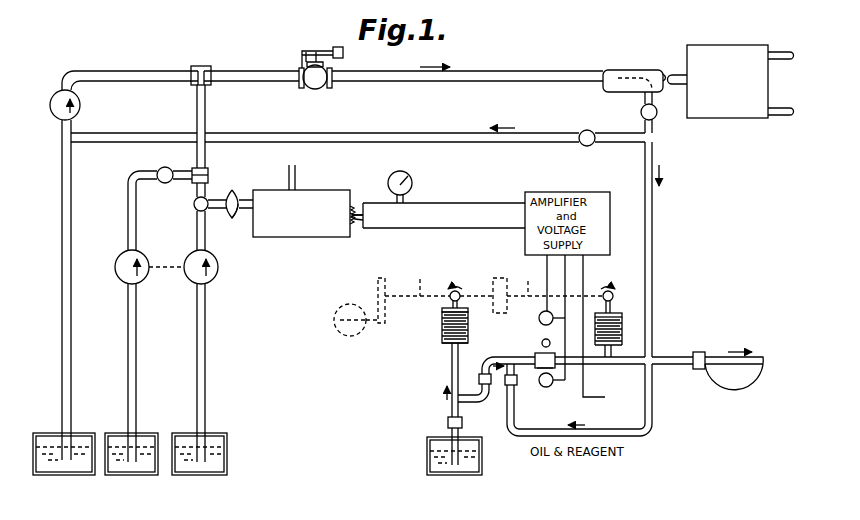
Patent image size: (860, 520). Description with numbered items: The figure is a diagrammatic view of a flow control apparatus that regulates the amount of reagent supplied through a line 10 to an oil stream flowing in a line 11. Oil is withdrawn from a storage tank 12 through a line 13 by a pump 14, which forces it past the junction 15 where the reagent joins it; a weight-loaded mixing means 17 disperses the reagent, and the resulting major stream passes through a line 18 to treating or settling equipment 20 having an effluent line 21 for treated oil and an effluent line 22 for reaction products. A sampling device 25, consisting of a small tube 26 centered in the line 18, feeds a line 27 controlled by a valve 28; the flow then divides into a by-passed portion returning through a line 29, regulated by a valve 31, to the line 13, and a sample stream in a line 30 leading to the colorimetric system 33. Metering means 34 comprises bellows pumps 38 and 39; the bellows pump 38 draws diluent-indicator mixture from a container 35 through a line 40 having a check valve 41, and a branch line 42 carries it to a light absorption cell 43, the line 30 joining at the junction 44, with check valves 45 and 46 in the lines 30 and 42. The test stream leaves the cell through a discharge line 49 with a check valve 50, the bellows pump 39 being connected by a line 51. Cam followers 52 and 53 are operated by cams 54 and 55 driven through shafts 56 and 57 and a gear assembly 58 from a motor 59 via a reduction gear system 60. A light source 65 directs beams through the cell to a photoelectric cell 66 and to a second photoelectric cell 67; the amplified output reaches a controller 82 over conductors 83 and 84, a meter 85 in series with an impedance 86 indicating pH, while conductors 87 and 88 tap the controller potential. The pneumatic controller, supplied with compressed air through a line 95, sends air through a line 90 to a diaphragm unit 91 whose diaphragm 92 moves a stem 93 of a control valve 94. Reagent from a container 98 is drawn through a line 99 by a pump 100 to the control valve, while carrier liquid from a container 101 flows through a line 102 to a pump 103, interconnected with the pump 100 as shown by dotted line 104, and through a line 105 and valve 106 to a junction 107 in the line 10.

The reagent line 10 is at (206, 108).
The oil line 11 is at (133, 71).
The storage tank 12 is at (45, 433).
The oil withdrawal line 13 is at (62, 333).
The pump 14 is at (80, 105).
The junction 15 is at (203, 66).
The mixing means 17 is at (315, 89).
The major stream line 18 is at (401, 82).
The treating, processing, or settling equipment 20 is at (719, 45).
The effluent line 21 is at (780, 52).
The effluent line 22 is at (777, 115).
The sampling device 25 is at (648, 68).
The tube 26 is at (618, 78).
The sample line 27 is at (645, 99).
The valve 28 is at (657, 118).
The by-pass line 29 is at (435, 133).
The sample stream line 30 is at (653, 219).
The valve 31 is at (581, 131).
The colorimetric system 33 is at (540, 370).
The metering means 34 is at (440, 346).
The container 35 is at (427, 440).
The bellows pump 38 is at (442, 325).
The bellows pump 39 is at (626, 331).
The line 40 is at (452, 385).
The check valve 41 is at (448, 422).
The branch line 42 is at (471, 403).
The light absorption cell 43 is at (538, 353).
The junction 44 is at (506, 357).
The check valve 45 is at (508, 386).
The check valve 46 is at (481, 374).
The discharge line 49 is at (598, 365).
The check valve 50 is at (699, 369).
The line 51 is at (613, 358).
The cam follower 52 is at (450, 303).
The cam follower 53 is at (626, 318).
The cam 54 is at (458, 291).
The cam 55 is at (611, 291).
The shaft 56 is at (417, 281).
The shaft 57 is at (555, 284).
The gear assembly 58 is at (485, 285).
The motor 59 is at (350, 337).
The reduction gear system 60 is at (385, 280).
The light source 65 is at (542, 340).
The photoelectric cell 66 is at (546, 388).
The second photoelectric cell 67 is at (540, 315).
The controller 82 is at (300, 240).
The conductor 83 is at (463, 228).
The conductor 84 is at (470, 203).
The meter 85 is at (413, 183).
The impedance 86 is at (368, 213).
The conductor 87 is at (356, 228).
The conductor 88 is at (355, 205).
The air line 90 is at (247, 200).
The diaphragm unit 91 is at (237, 224).
The diaphragm 92 is at (232, 190).
The stem 93 is at (218, 210).
The control valve 94 is at (194, 205).
The compressed air line 95 is at (297, 172).
The reagent container 98 is at (218, 436).
The reagent withdrawal line 99 is at (206, 361).
The reagent pump 100 is at (213, 281).
The carrier liquid container 101 is at (148, 436).
The carrier liquid line 102 is at (137, 357).
The carrier liquid pump 103 is at (123, 281).
The dotted line 104 is at (166, 268).
The carrier liquid delivery line 105 is at (128, 212).
The valve 106 is at (158, 170).
The junction 107 is at (195, 168).